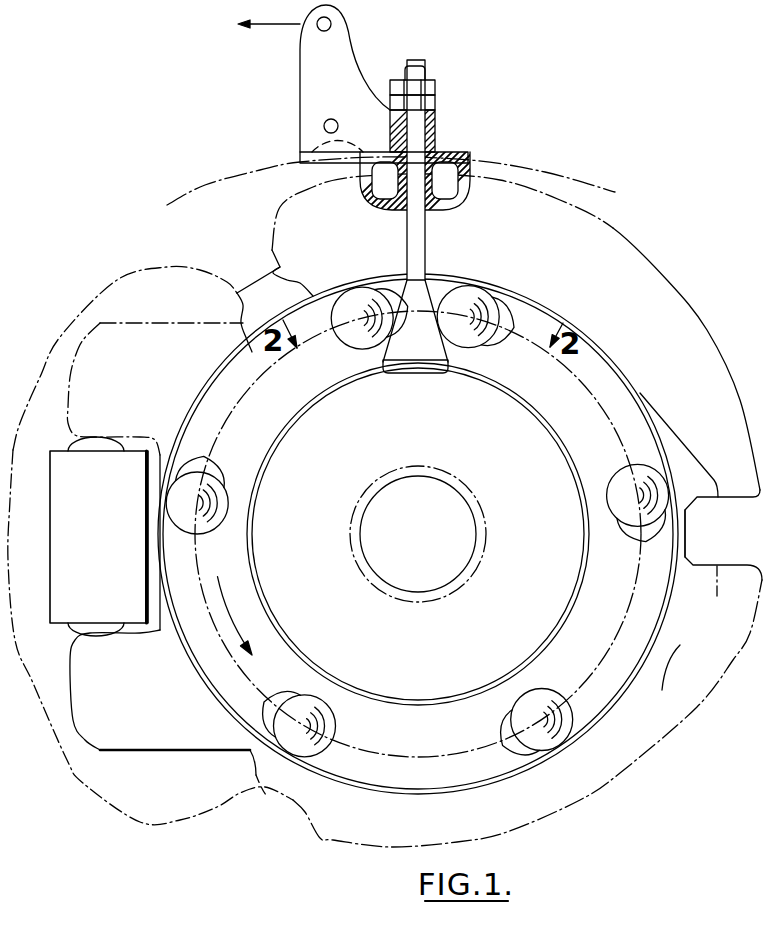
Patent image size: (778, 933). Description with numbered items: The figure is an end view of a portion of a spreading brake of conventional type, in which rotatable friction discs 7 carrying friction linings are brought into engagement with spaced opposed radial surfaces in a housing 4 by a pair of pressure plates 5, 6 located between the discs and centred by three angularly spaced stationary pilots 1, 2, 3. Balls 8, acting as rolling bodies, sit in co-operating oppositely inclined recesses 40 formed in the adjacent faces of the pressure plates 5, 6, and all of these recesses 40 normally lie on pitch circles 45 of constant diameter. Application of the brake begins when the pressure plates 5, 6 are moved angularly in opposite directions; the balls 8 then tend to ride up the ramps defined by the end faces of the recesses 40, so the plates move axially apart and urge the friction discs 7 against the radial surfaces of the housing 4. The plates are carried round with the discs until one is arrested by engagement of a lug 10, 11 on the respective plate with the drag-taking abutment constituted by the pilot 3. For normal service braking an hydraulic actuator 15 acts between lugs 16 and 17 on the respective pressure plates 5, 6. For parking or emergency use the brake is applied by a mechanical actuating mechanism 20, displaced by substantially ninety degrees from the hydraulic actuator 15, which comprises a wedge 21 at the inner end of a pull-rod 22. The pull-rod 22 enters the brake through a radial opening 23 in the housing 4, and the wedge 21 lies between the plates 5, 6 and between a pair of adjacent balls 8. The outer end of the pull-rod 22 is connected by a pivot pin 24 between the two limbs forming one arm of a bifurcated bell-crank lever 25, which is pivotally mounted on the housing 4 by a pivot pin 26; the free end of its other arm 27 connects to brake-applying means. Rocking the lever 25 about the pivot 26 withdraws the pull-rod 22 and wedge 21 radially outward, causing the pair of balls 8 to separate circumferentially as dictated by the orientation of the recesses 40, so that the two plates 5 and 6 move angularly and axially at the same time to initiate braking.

The stationary pilot 1 is at (270, 808).
The stationary pilot 2 is at (251, 272).
The stationary pilot 3 is at (710, 520).
The housing 4 is at (200, 228).
The pressure plate 5 is at (668, 432).
The pressure plate 6 is at (693, 623).
The friction disc 7 is at (250, 402).
The ball 8 is at (365, 338).
The lug 10 is at (697, 475).
The lug 11 is at (697, 594).
The hydraulic actuator 15 is at (75, 560).
The lug 16 is at (100, 712).
The lug 17 is at (90, 377).
The mechanical actuating mechanism 20 is at (432, 236).
The wedge 21 is at (430, 357).
The pull-rod 22 is at (436, 128).
The radial opening 23 is at (468, 165).
The pivot pin 24 is at (437, 102).
The bifurcated bell-crank lever 25 is at (335, 76).
The pivot pin 26 is at (322, 126).
The arm 27 is at (314, 54).
The recess 40 is at (412, 355).
The pitch circle 45 is at (605, 400).